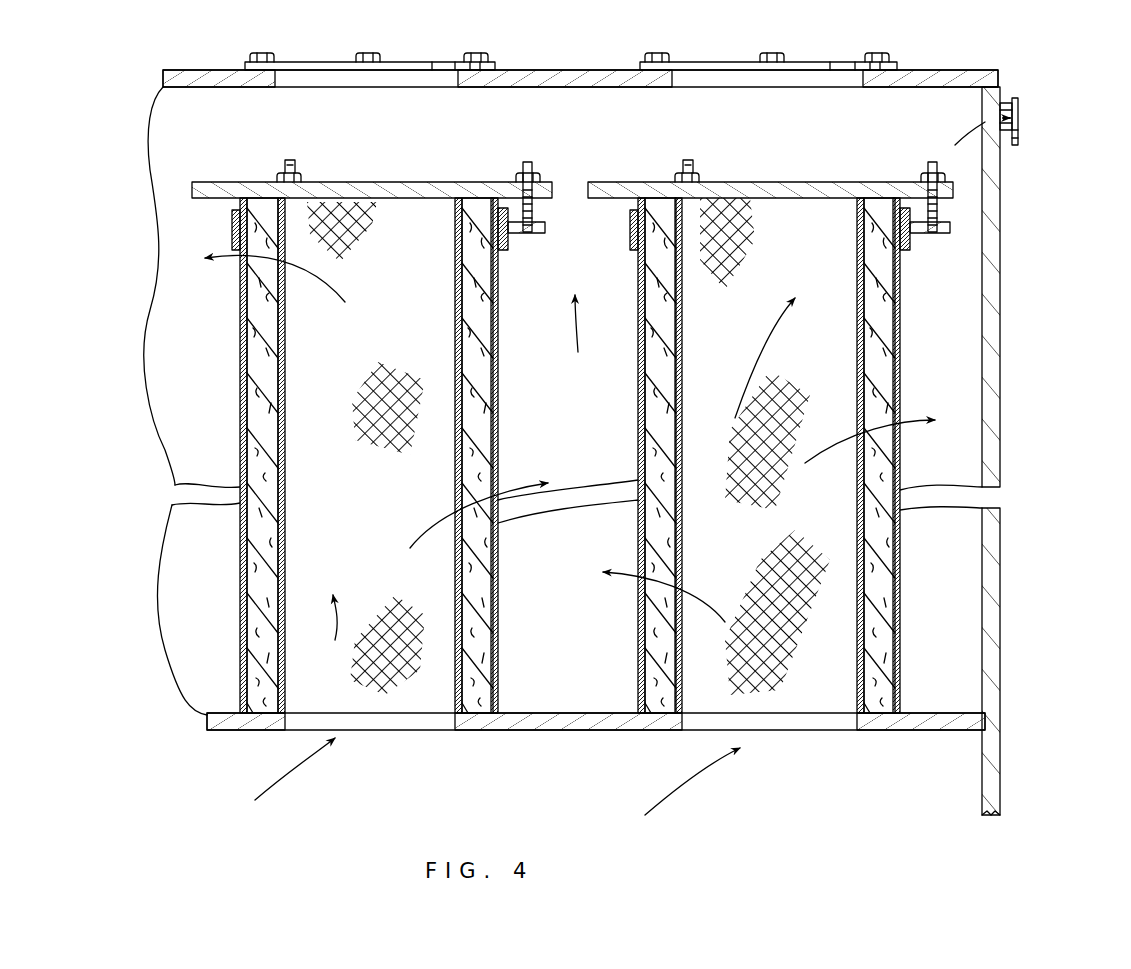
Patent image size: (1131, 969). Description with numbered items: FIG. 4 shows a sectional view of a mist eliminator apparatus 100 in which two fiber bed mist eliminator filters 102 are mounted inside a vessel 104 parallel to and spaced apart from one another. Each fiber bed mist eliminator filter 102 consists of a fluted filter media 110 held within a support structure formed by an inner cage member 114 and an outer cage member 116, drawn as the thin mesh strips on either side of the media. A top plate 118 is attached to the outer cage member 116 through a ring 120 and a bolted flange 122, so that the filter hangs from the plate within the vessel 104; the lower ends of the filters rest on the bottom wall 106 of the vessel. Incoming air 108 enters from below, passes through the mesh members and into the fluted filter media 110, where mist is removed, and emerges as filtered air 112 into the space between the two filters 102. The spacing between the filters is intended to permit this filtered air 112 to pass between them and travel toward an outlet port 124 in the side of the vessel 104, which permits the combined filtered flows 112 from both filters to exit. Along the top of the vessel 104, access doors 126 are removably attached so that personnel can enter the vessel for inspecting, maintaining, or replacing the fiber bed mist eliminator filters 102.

The filter apparatus 100 is at (1055, 334).
The fiber bed mist eliminator filter 102 is at (383, 170).
The vessel 104 is at (1003, 215).
The bottom plate 106 is at (432, 732).
The inlet air flow 108 is at (282, 795).
The fluted filter media 110 is at (277, 555).
The filtered air 112 is at (512, 477).
The inner cage member 114 is at (285, 478).
The outer cage member 116 is at (240, 445).
The top plate 118 is at (207, 182).
The ring 120 is at (508, 238).
The bolted flange 122 is at (549, 210).
The outlet port 124 is at (1012, 103).
The access door 126 is at (430, 62).